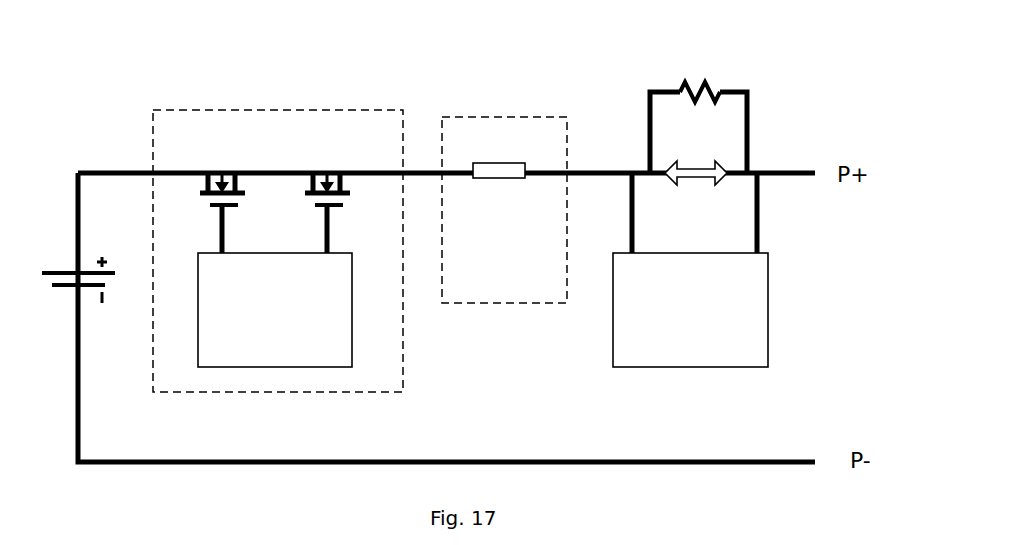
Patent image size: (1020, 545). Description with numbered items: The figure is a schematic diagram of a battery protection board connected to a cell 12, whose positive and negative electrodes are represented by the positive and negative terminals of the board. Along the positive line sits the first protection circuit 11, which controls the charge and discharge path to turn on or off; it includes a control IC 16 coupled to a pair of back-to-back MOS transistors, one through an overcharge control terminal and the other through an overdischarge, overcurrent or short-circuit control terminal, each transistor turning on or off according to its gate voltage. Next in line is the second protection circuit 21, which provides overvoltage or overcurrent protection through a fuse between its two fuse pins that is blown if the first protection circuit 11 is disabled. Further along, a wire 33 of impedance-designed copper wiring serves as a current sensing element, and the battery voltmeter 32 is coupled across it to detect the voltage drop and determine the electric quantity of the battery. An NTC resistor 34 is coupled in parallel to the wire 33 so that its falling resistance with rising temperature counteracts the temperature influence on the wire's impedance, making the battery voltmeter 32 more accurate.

The first protection circuit 11 is at (279, 231).
The cell 12 is at (115, 272).
The control IC 16 is at (352, 298).
The second protection circuit 21 is at (540, 117).
The battery voltmeter 32 is at (768, 290).
The wire 33 is at (680, 163).
The NTC resistor 34 is at (693, 73).